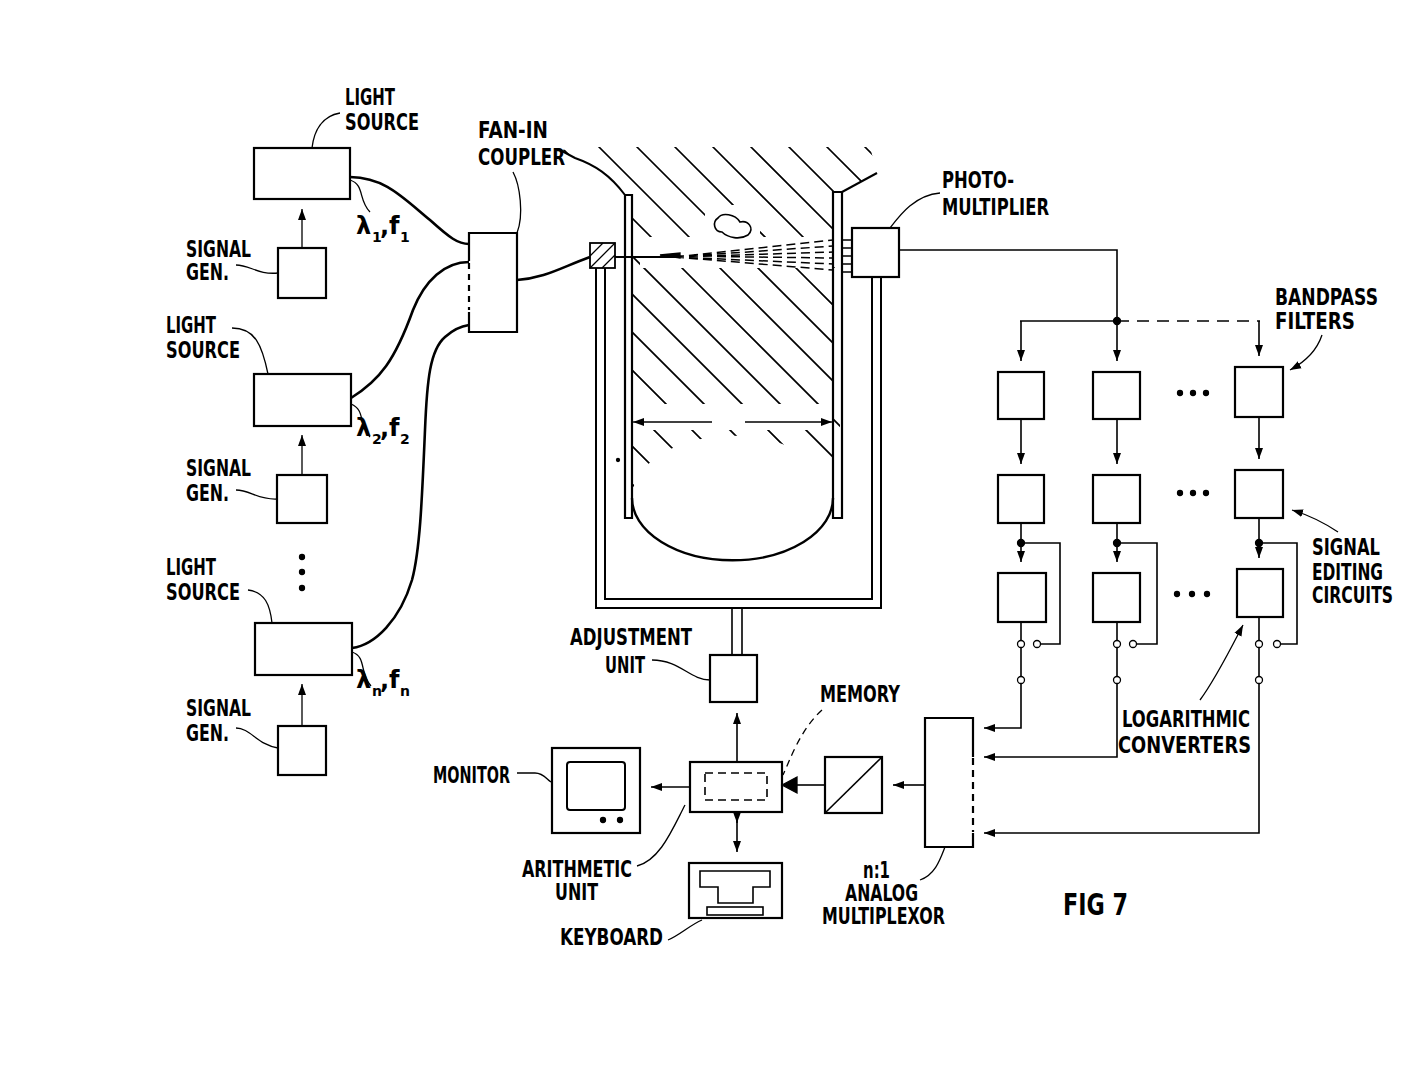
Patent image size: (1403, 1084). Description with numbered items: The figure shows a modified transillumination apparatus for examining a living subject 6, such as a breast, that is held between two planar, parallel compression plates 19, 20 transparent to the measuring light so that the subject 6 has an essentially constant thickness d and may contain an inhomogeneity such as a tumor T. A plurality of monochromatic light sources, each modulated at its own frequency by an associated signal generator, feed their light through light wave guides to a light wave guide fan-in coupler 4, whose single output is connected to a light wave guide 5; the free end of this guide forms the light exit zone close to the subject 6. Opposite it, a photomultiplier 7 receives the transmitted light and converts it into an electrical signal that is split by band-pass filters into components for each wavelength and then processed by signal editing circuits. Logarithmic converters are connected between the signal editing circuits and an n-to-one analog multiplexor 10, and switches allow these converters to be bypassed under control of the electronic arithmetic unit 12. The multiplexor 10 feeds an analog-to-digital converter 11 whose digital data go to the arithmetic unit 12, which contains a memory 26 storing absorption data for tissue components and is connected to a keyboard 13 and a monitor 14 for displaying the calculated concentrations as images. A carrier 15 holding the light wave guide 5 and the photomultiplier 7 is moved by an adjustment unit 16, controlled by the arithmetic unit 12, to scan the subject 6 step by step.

The light wave guide fan-in coupler 4 is at (484, 233).
The light wave guide 5 is at (549, 275).
The living subject 6 is at (675, 547).
The photomultiplier 7 is at (876, 228).
The n:1 analog multiplexor 10 is at (948, 718).
The analog-to-digital converter 11 is at (865, 757).
The electronic arithmetic unit 12 is at (758, 762).
The keyboard 13 is at (689, 898).
The monitor 14 is at (578, 748).
The carrier 15 is at (855, 599).
The adjustment unit 16 is at (757, 678).
The compression plate 19 is at (842, 336).
The compression plate 20 is at (625, 362).
The memory 26 is at (725, 777).
The tumor T is at (745, 216).
The thickness d is at (732, 423).